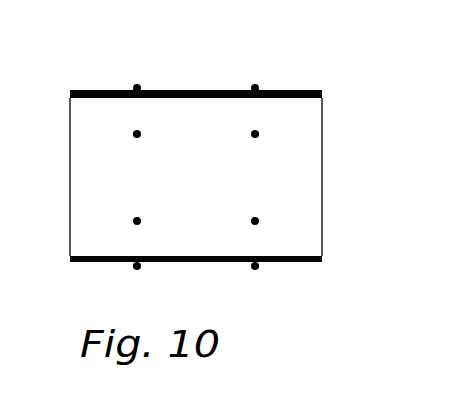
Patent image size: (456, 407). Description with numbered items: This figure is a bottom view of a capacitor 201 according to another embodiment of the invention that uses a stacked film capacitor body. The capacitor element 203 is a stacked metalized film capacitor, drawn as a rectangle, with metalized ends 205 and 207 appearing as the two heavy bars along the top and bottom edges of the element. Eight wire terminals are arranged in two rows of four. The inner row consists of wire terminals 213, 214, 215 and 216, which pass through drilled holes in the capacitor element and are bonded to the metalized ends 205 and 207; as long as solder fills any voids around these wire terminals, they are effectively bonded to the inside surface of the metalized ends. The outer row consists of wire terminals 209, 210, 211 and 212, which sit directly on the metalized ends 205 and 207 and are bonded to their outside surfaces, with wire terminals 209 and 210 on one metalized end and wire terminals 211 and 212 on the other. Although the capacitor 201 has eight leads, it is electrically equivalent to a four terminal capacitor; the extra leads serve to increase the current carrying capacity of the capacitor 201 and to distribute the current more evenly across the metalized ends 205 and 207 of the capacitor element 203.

The capacitor 201 is at (72, 73).
The capacitor element 203 is at (325, 190).
The metalized end 205 is at (298, 82).
The metalized end 207 is at (288, 268).
The wire terminal 209 is at (143, 87).
The wire terminal 210 is at (242, 82).
The wire terminal 211 is at (138, 278).
The wire terminal 212 is at (243, 273).
The wire terminal 213 is at (118, 144).
The wire terminal 214 is at (266, 140).
The wire terminal 215 is at (115, 227).
The wire terminal 216 is at (270, 221).